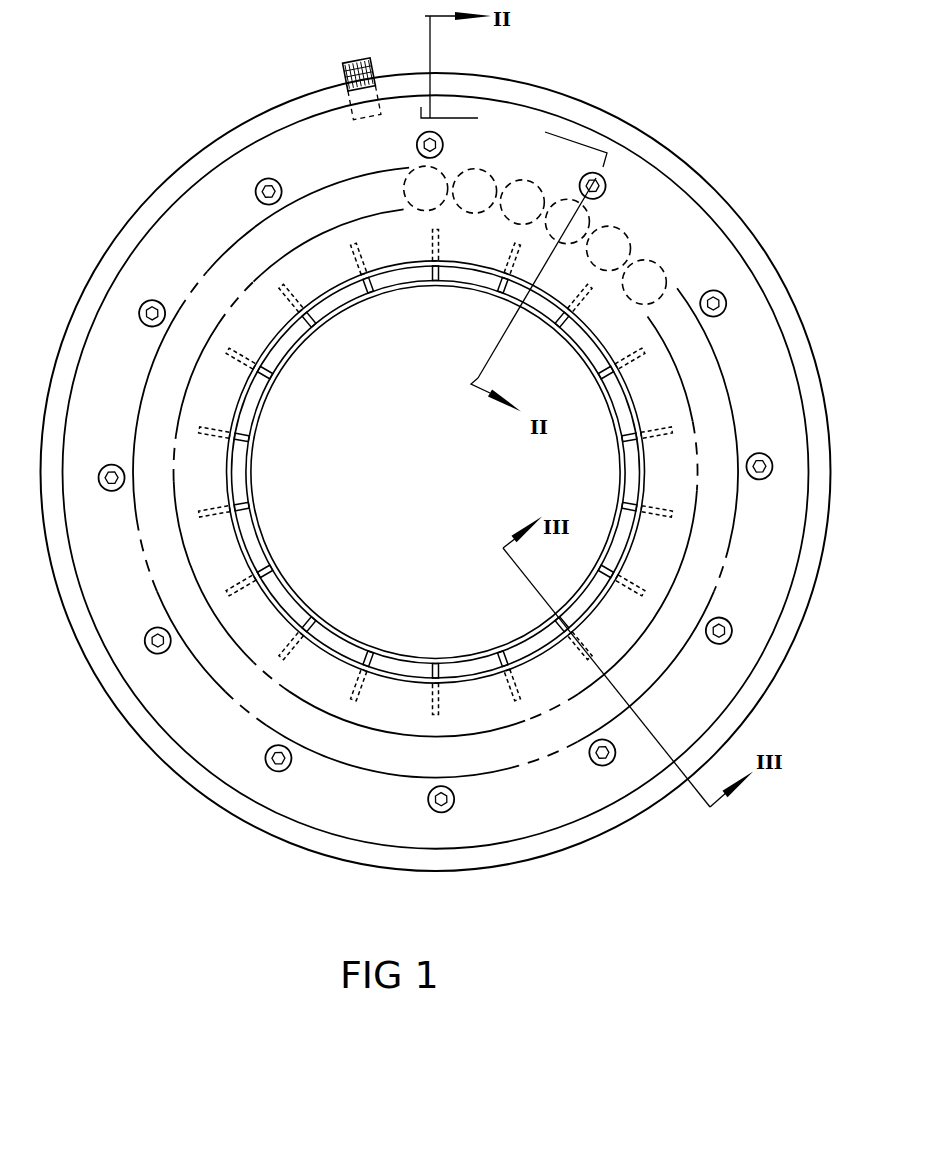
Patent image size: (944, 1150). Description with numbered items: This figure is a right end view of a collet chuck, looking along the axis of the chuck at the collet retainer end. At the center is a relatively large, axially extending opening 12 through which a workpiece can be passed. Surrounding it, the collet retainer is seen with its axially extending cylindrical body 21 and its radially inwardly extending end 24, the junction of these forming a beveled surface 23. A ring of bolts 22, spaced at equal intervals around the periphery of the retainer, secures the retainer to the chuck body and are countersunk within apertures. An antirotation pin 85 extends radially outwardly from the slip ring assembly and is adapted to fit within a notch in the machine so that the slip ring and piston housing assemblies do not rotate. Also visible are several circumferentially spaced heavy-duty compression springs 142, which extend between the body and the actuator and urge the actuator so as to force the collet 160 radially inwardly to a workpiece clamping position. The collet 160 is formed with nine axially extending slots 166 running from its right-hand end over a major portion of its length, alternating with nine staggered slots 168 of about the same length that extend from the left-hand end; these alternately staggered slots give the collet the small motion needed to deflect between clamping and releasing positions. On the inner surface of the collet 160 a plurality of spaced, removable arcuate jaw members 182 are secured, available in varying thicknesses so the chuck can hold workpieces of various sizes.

The axially extending opening 12 is at (458, 450).
The cylindrical body 21 is at (145, 203).
The bolts 22 is at (416, 143).
The beveled surface 23 is at (192, 170).
The radially inwardly extending end 24 is at (118, 373).
The antirotation pin 85 is at (340, 72).
The compression springs 142 is at (512, 181).
The collet 160 is at (304, 356).
The axially extending slots 166 is at (294, 292).
The staggered slots 168 is at (368, 298).
The rear jaw members 182 is at (540, 315).